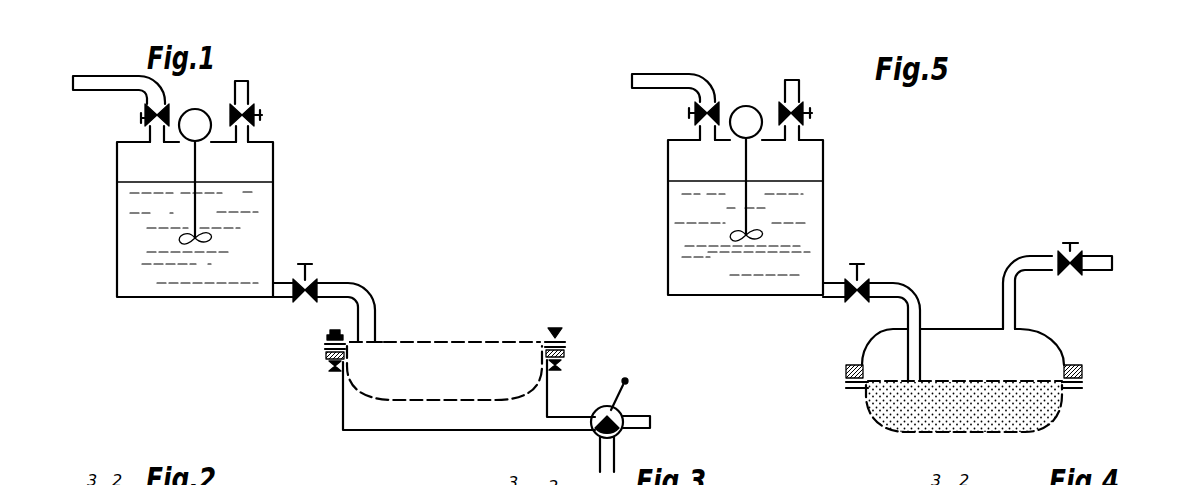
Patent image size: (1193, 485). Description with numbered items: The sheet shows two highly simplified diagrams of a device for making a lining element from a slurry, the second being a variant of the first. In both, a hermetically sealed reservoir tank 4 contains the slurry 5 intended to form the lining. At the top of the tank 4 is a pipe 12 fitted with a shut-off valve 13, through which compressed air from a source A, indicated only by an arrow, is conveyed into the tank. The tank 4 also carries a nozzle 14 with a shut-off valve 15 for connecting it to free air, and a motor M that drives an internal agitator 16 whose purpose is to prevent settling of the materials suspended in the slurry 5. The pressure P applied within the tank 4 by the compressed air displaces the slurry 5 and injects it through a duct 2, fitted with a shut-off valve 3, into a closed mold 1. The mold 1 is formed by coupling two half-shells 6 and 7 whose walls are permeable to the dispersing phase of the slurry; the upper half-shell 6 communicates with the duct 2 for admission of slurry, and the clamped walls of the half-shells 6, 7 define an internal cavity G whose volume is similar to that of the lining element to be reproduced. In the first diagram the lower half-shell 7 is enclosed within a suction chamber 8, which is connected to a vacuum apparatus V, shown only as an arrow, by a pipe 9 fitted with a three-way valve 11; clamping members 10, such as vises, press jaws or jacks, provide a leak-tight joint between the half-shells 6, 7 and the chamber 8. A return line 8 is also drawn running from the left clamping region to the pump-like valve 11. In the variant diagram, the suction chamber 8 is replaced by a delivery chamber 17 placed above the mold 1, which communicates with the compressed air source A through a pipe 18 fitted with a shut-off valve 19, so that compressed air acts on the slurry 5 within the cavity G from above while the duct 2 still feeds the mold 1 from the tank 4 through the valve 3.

In FIG. 1, the closed mold 1 is at (505, 338).
In FIG. 1, the duct 2 is at (377, 301).
In FIG. 5, the duct 2 is at (917, 286).
In FIG. 1, the shut-off valve 3 is at (312, 270).
In FIG. 5, the shut-off valve 3 is at (863, 271).
In FIG. 1, the reservoir tank 4 is at (275, 198).
In FIG. 5, the reservoir tank 4 is at (825, 213).
In FIG. 1, the slurry 5 is at (130, 230).
In FIG. 5, the slurry 5 is at (683, 202).
In FIG. 1, the upper half-shell 6 is at (449, 340).
In FIG. 5, the upper half-shell 6 is at (1035, 379).
In FIG. 1, the half-shell 7 is at (490, 399).
In FIG. 5, the half-shell 7 is at (1057, 418).
In FIG. 1, the suction chamber 8 is at (427, 437).
In FIG. 1, the pipe 9 is at (565, 412).
In FIG. 1, the clamping members 10 is at (326, 331).
In FIG. 1, the three-way valve 11 is at (614, 412).
In FIG. 1, the pipe 12 is at (102, 76).
In FIG. 5, the pipe 12 is at (700, 72).
In FIG. 1, the shut-off valve 13 is at (144, 116).
In FIG. 1, the nozzle 14 is at (250, 92).
In FIG. 5, the nozzle 14 is at (799, 90).
In FIG. 1, the shut-off valve 15 is at (262, 116).
In FIG. 5, the shut-off valve 15 is at (812, 115).
In FIG. 1, the internal agitator 16 is at (198, 162).
In FIG. 5, the internal agitator 16 is at (749, 162).
In FIG. 5, the delivery chamber 17 is at (1052, 344).
In FIG. 5, the pipe 18 is at (1022, 303).
In FIG. 5, the shut-off valve 19 is at (1062, 252).
In FIG. 1, the motor M is at (197, 117).
In FIG. 5, the motor M is at (749, 117).
In FIG. 1, the pressure P is at (146, 150).
In FIG. 5, the pressure P is at (1006, 452).
In FIG. 1, the internal cavity G is at (421, 355).
In FIG. 5, the internal cavity G is at (881, 404).
In FIG. 1, the compressed air source A is at (68, 83).
In FIG. 5, the compressed air source A is at (626, 82).
In FIG. 1, the vacuum apparatus V is at (655, 422).